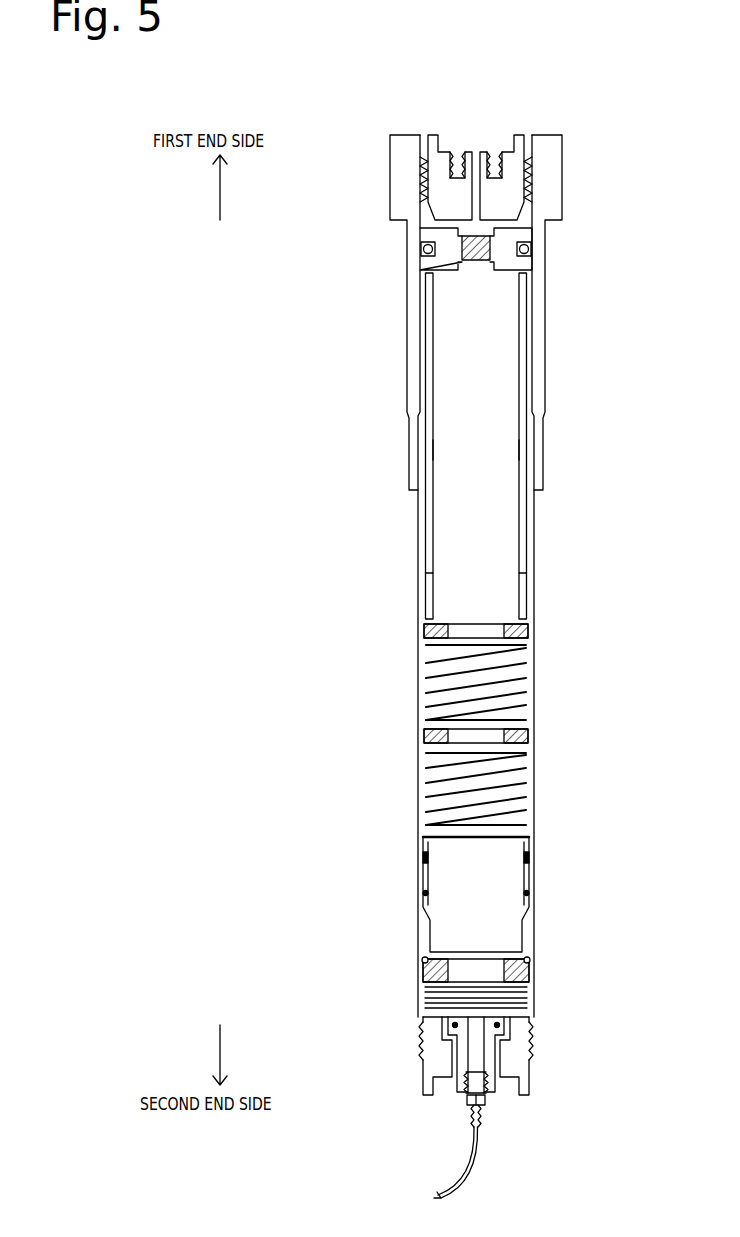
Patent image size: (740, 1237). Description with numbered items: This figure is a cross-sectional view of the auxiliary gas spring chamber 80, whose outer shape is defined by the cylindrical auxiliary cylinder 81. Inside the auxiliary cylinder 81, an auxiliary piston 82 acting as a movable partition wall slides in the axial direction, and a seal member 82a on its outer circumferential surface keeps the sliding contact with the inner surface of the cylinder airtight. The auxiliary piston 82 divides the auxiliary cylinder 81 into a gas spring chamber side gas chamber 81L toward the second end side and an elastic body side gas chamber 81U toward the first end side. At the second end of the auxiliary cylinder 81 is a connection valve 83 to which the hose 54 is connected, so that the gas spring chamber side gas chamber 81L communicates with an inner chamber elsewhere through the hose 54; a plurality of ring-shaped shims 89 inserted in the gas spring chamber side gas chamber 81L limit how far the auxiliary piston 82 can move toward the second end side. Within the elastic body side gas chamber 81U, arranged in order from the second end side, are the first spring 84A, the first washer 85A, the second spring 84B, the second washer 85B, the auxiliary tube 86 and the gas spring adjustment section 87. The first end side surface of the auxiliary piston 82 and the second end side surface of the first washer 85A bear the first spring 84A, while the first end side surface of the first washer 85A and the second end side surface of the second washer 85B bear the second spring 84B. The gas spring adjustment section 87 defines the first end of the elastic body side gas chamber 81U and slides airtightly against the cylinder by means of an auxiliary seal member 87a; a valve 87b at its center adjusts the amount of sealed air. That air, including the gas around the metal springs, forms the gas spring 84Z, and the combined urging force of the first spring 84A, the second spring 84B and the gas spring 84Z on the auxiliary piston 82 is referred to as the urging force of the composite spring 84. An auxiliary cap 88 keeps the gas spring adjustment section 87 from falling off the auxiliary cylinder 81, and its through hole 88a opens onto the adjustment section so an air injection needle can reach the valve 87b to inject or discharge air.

The auxiliary gas spring chamber 80 is at (354, 273).
The auxiliary cylinder 81 is at (534, 536).
The elastic body side gas chamber 81U is at (507, 612).
The gas spring chamber side gas chamber 81L is at (527, 987).
The auxiliary piston 82 is at (497, 881).
The seal member 82a is at (530, 858).
The connection valve 83 is at (480, 1113).
The composite spring 84 is at (323, 435).
The gas spring 84Z is at (465, 449).
The second spring 84B is at (437, 671).
The first spring 84A is at (437, 775).
The first washer 85A is at (526, 737).
The second washer 85B is at (526, 630).
The auxiliary tube 86 is at (526, 357).
The gas spring adjustment section 87 is at (513, 237).
The auxiliary seal member 87a is at (531, 249).
The valve 87b is at (475, 262).
The auxiliary cap 88 is at (515, 190).
The through hole 88a is at (477, 197).
The shim 89 is at (527, 1000).
The hose 54 is at (467, 1168).